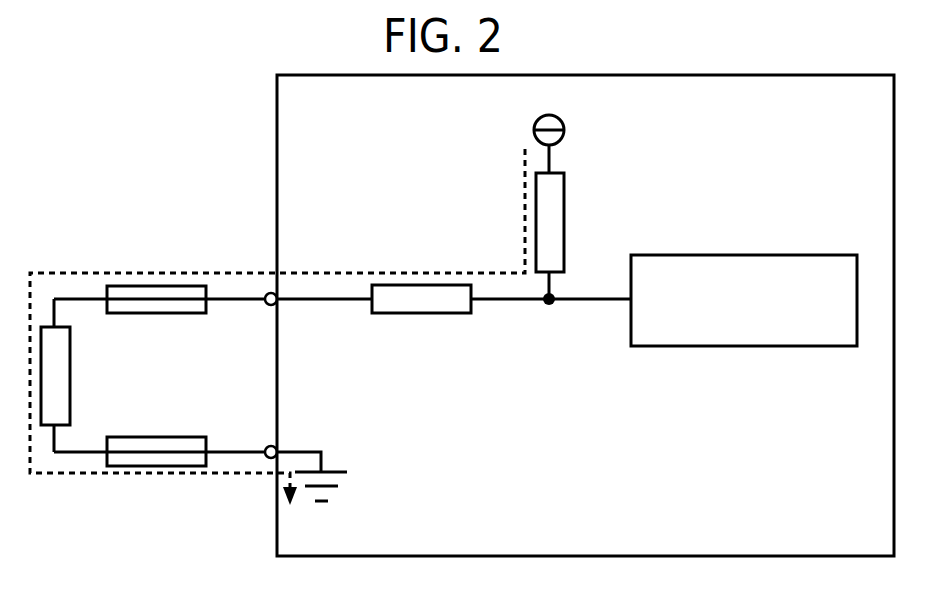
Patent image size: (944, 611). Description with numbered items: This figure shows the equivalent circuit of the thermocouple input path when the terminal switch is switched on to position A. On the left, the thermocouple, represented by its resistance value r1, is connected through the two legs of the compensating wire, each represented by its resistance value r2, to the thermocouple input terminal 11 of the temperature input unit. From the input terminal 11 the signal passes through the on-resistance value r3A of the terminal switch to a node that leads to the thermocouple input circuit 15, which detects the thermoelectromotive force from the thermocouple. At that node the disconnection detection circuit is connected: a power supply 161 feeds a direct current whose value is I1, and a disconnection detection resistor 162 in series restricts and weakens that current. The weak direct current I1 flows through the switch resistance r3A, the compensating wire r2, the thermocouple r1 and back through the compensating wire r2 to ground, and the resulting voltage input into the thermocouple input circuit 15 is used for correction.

The resistance value of the thermocouple r1 is at (70, 360).
The resistance value of the compensating wire r2 is at (135, 314).
The thermocouple input terminal 11 is at (269, 305).
The on-resistance value of the terminal switch r3A is at (400, 314).
The current value of the direct current I1 is at (482, 273).
The power supply 161 is at (599, 118).
The disconnection detection resistor 162 is at (565, 181).
The thermocouple input circuit 15 is at (668, 255).